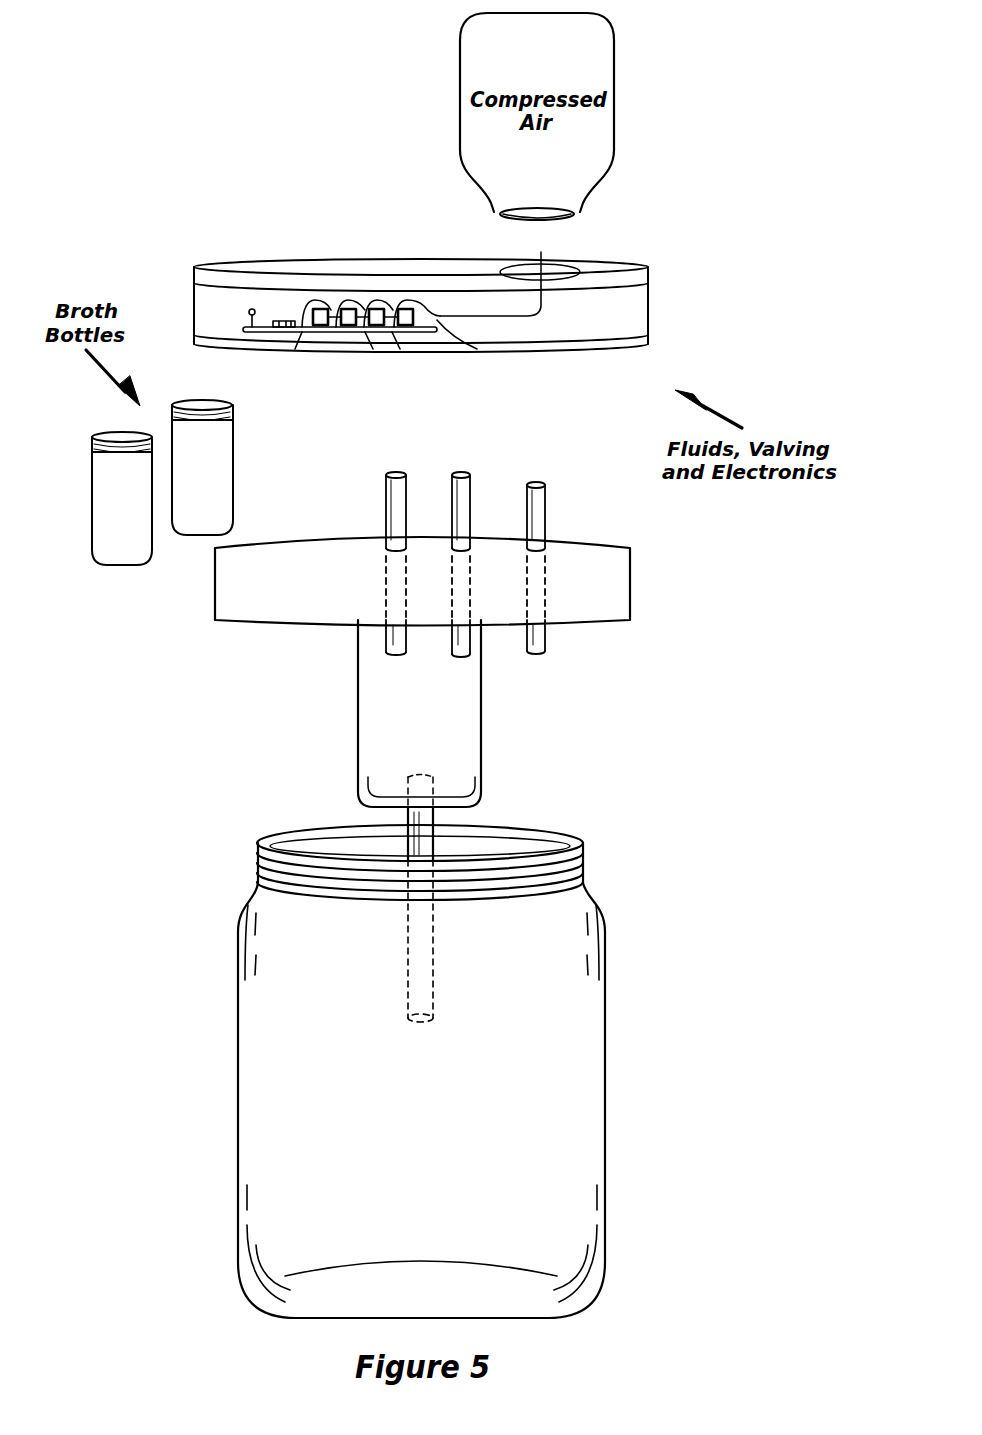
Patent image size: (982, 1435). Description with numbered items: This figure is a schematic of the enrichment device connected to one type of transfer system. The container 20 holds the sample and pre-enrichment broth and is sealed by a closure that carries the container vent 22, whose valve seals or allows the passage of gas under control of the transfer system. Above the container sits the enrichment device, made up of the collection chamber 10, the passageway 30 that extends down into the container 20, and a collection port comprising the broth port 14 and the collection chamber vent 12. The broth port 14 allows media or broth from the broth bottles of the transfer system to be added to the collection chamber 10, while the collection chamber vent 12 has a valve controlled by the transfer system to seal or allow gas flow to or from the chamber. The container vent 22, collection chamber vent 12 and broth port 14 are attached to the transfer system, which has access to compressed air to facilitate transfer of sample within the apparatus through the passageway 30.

The collection chamber 10 is at (358, 733).
The collection chamber vent 12 is at (471, 503).
The broth port 14 is at (388, 530).
The container 20 is at (605, 1048).
The container vent 22 is at (546, 530).
The passageway 30 is at (433, 976).